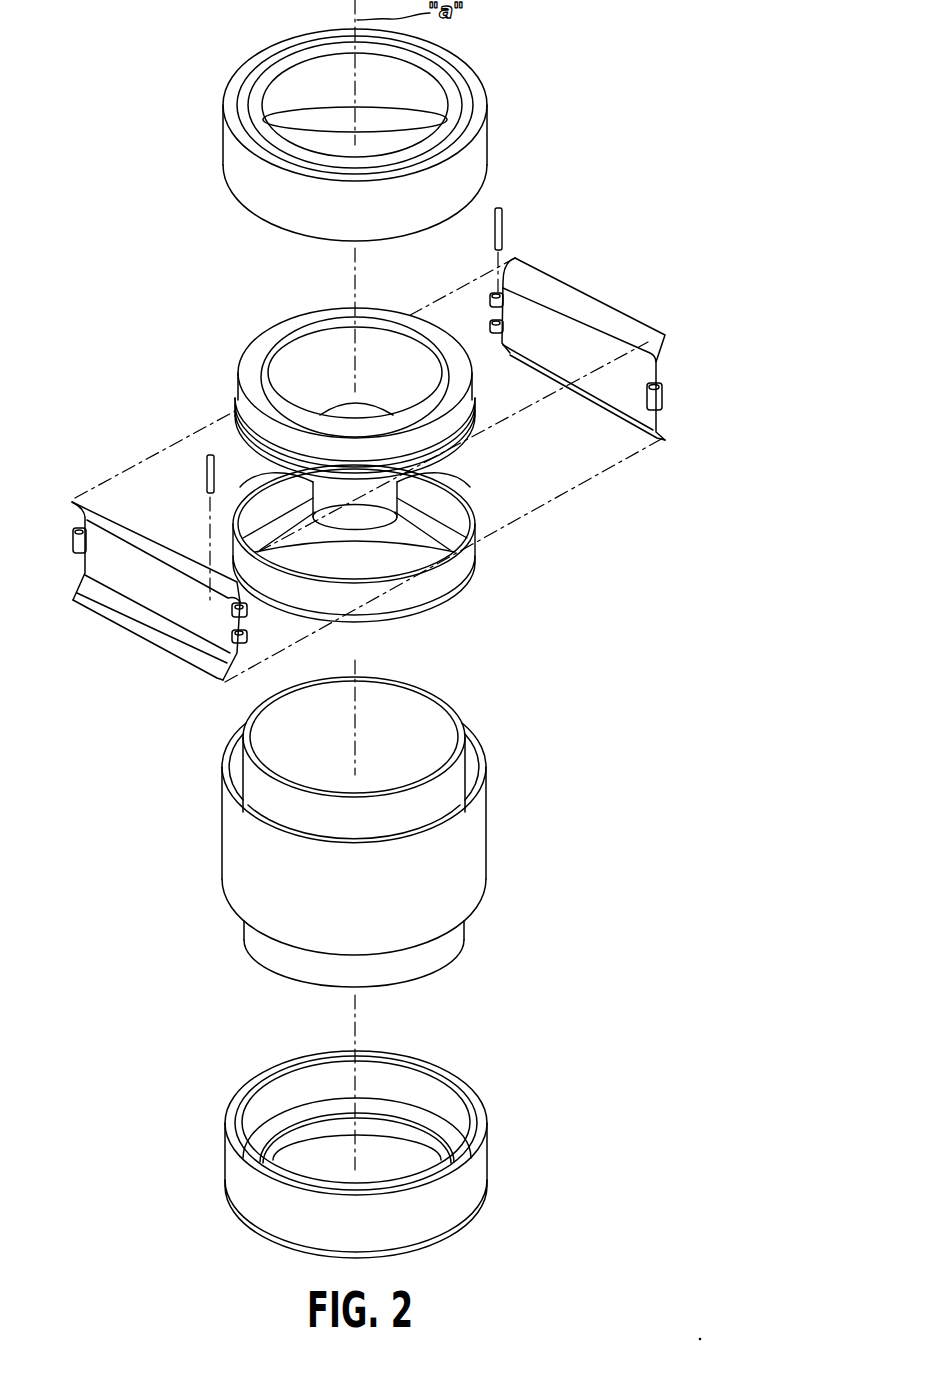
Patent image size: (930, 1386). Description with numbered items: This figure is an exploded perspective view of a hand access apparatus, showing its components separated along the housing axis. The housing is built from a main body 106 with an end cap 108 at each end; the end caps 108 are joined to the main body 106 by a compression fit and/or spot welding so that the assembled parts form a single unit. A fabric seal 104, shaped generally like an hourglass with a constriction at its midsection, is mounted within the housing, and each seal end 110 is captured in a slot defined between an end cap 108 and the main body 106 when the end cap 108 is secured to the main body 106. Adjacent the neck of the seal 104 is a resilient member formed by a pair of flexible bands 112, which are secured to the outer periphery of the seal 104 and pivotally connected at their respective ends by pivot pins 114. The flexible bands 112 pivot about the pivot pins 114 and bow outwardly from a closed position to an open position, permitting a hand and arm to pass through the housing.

The seal 104 is at (257, 340).
The main body 106 is at (487, 833).
The end caps 108 is at (487, 117).
The seal end 110 is at (238, 390).
The flexible bands 112 is at (598, 298).
The pivot pins 114 is at (500, 220).